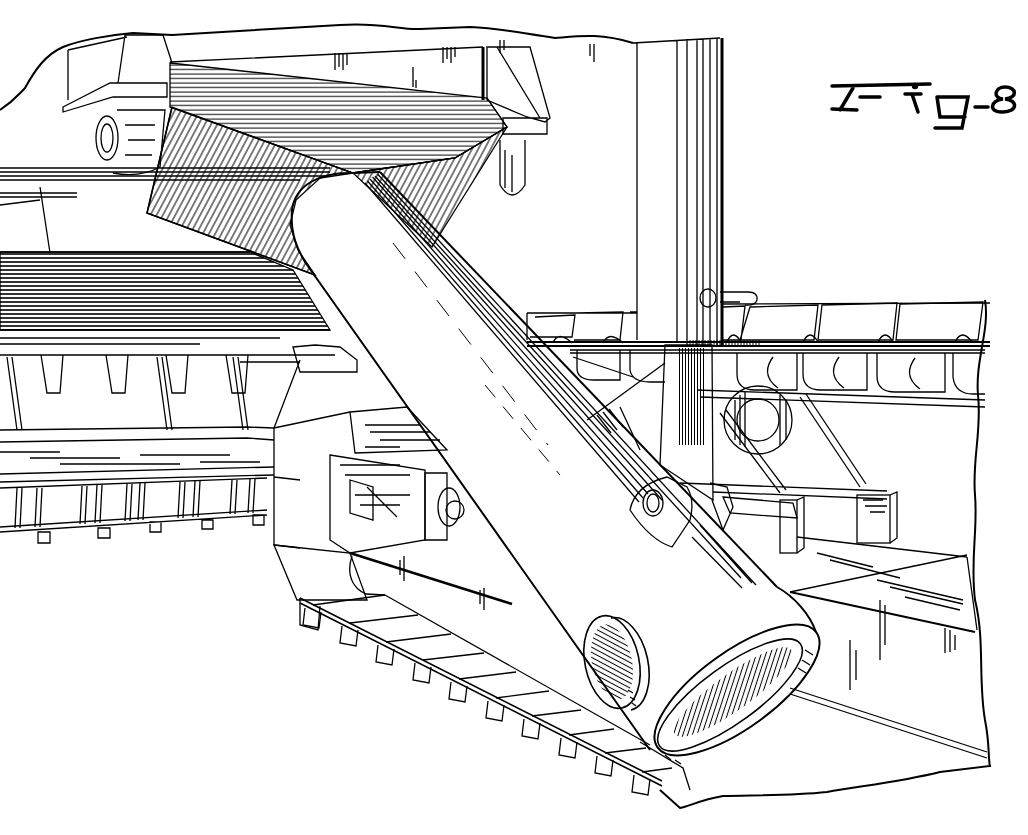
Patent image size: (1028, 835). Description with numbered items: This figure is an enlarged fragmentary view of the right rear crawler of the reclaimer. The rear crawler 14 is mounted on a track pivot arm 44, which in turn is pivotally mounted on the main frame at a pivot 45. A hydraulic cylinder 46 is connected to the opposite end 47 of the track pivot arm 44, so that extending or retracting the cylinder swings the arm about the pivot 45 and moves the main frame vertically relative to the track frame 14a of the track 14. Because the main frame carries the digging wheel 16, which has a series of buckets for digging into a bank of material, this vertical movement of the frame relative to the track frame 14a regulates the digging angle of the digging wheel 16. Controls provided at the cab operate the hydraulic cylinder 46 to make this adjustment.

The outside rear crawler 14 is at (990, 377).
The track frame 14a is at (827, 663).
The digging wheel 16 is at (88, 534).
The track pivot arm 44 is at (455, 263).
The pivot mounting 45 is at (100, 140).
The hydraulic cylinder 46 is at (703, 177).
The opposite end of the track pivot arm 47 is at (693, 490).